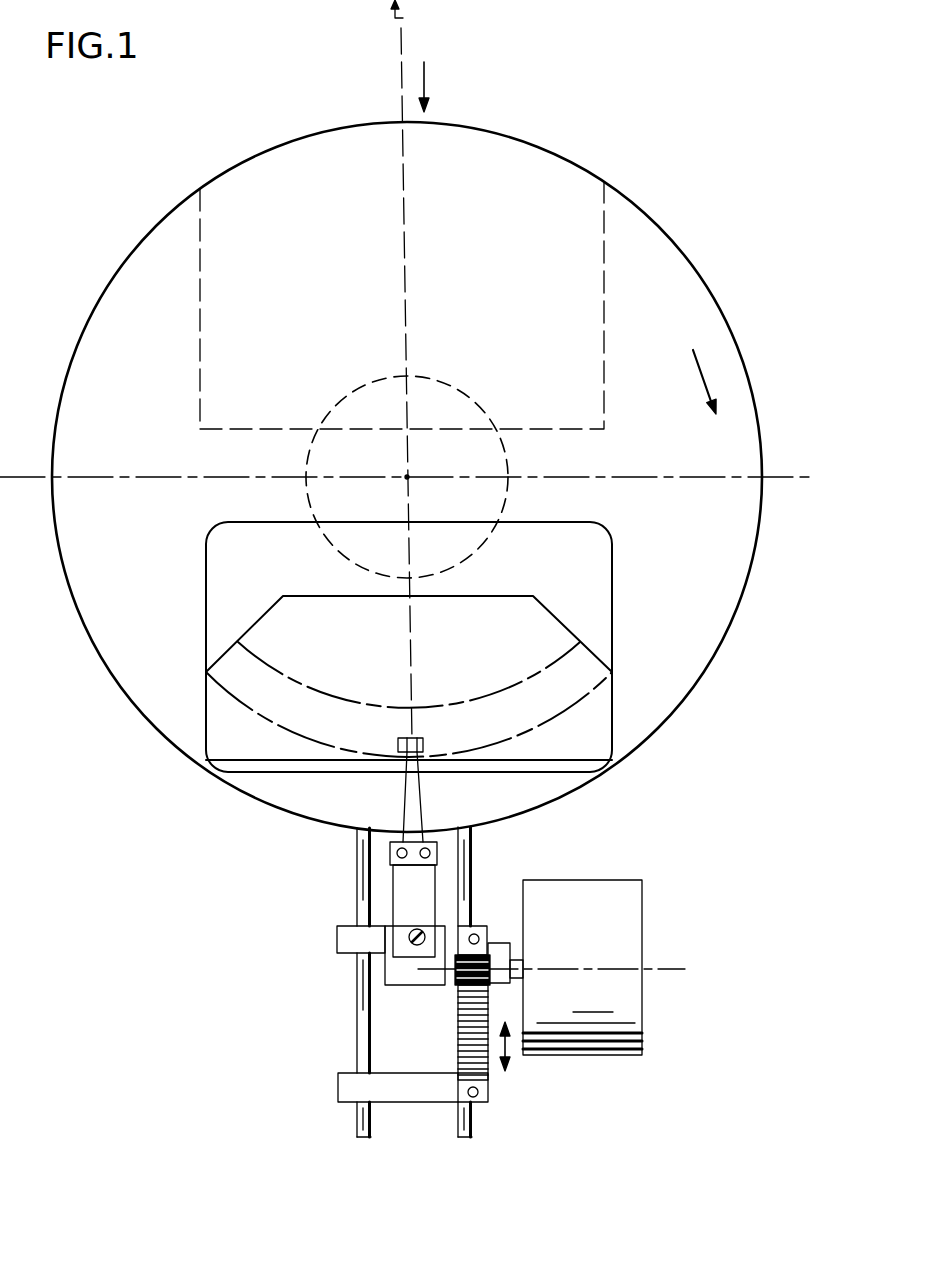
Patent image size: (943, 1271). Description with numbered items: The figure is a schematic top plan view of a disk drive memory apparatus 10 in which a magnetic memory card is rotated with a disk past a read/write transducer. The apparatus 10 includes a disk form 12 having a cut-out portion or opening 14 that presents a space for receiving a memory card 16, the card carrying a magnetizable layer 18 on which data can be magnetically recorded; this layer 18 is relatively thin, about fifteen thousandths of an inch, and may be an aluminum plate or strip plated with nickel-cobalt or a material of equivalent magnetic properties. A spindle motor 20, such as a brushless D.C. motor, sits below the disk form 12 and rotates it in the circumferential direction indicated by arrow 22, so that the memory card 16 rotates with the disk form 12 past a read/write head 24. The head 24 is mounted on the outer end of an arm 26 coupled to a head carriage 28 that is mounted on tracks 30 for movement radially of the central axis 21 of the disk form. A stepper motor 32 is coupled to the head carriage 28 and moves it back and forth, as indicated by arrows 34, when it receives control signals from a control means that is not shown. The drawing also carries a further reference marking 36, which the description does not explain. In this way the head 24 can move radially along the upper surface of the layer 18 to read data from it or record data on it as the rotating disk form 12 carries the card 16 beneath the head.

The disk drive memory apparatus 10 is at (600, 136).
The disk form 12 is at (664, 222).
The cut-out portion or opening 14 is at (606, 283).
The memory card 16 is at (592, 563).
The magnetizable layer 18 is at (545, 628).
The spindle motor 20 is at (482, 407).
The central axis 21 is at (412, 472).
The arrow 22 is at (703, 378).
The read/write head 24 is at (423, 740).
The arm 26 is at (418, 802).
The head carriage 28 is at (338, 948).
The tracks 30 is at (358, 870).
The stepper motor 32 is at (598, 881).
The arrows 34 is at (509, 1056).
The scanning direction 36 is at (424, 92).